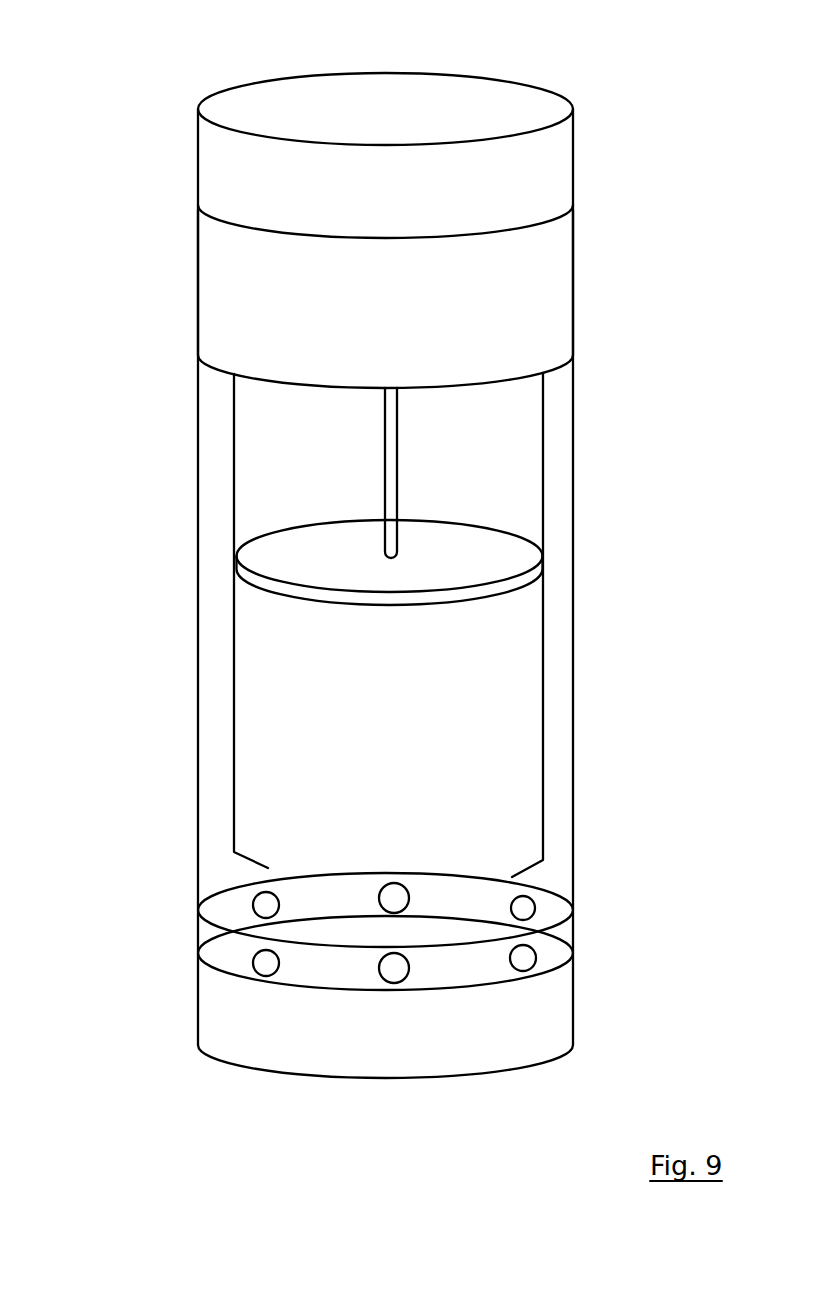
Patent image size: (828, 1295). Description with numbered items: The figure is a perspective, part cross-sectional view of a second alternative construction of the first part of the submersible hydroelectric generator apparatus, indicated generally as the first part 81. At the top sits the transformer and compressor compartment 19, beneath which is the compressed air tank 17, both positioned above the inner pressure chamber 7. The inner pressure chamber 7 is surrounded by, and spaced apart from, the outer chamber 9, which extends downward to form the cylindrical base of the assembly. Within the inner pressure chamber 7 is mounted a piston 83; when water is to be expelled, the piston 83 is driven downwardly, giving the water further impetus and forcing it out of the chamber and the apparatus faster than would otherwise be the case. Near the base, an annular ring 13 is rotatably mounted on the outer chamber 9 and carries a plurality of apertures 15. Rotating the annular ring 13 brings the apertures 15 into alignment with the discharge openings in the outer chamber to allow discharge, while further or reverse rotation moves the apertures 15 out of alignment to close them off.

The first part of the apparatus 81 is at (166, 152).
The transformer and compressor compartment 19 is at (547, 160).
The compressed air tank 17 is at (542, 272).
The outer chamber 9 is at (568, 480).
The inner pressure chamber 7 is at (520, 660).
The piston 83 is at (370, 547).
The annular ring 13 is at (562, 930).
The apertures 15 is at (523, 965).